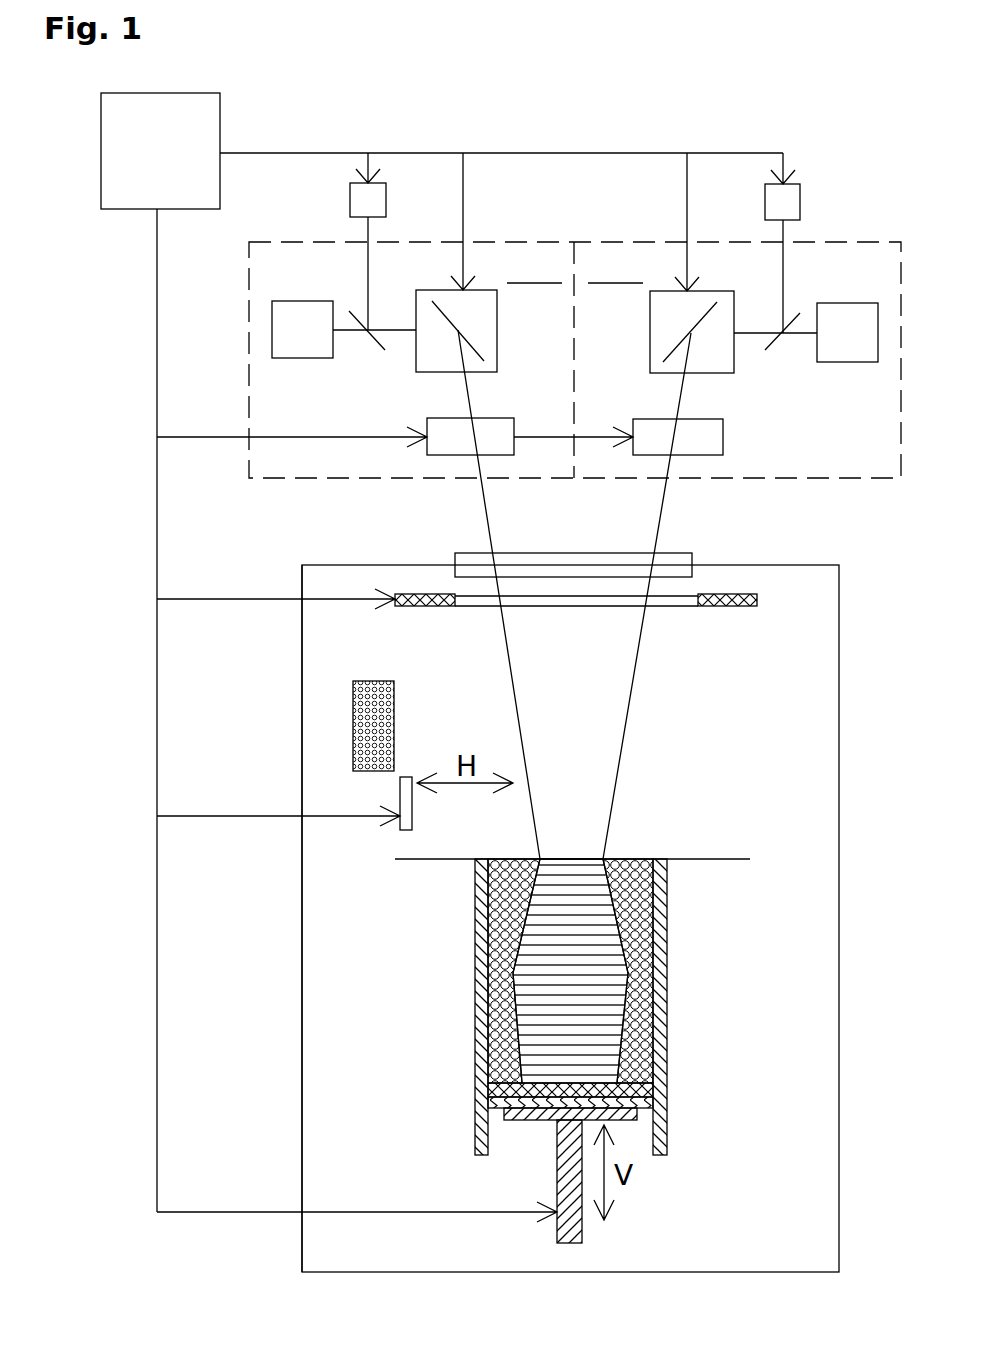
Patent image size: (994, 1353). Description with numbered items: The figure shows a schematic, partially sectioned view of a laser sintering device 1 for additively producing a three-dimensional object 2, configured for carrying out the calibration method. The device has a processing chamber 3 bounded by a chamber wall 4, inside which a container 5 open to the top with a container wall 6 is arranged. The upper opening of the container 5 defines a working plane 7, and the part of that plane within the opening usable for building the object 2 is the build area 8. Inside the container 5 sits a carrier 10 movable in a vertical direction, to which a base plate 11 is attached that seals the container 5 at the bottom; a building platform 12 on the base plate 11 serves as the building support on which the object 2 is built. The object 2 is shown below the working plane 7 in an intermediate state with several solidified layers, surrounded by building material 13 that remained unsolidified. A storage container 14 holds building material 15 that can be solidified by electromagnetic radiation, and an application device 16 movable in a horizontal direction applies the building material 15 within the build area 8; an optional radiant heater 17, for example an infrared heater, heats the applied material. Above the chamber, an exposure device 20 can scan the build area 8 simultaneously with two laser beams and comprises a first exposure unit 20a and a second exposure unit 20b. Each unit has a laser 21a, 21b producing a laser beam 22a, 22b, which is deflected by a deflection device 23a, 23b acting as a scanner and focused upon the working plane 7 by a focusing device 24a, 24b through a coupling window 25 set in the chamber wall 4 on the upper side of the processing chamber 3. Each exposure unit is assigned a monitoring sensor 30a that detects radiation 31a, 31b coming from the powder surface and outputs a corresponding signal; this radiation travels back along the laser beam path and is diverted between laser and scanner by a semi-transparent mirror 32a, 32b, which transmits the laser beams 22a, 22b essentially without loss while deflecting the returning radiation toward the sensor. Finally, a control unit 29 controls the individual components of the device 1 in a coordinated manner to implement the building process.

The laser sintering device 1 is at (855, 203).
The object 2 is at (590, 918).
The processing chamber 3 is at (791, 612).
The chamber wall 4 is at (302, 1060).
The container 5 is at (569, 1007).
The container wall 6 is at (662, 1008).
The working plane 7 is at (718, 859).
The build area 8 is at (622, 859).
The carrier 10 is at (546, 1112).
The base plate 11 is at (507, 1107).
The building platform 12 is at (488, 1090).
The building material 13 is at (507, 905).
The storage container 14 is at (372, 681).
The building material 15 is at (394, 727).
The application device 16 is at (397, 798).
The radiant heater 17 is at (425, 594).
The exposure device 20 is at (655, 230).
The first exposure unit 20a is at (534, 270).
The second exposure unit 20b is at (615, 270).
The laser 21a is at (300, 356).
The laser 21b is at (848, 356).
The laser beam 22a is at (337, 333).
The laser beam 22b is at (813, 338).
The deflection device 23a is at (455, 300).
The deflection device 23b is at (690, 302).
The focusing device 24a is at (481, 425).
The focusing device 24b is at (667, 425).
The coupling window 25 is at (667, 565).
The control unit 29 is at (160, 151).
The monitoring sensor 30a is at (352, 196).
The radiation 31a is at (371, 302).
The radiation 31b is at (780, 305).
The semi-transparent mirror 32a is at (364, 310).
The semi-transparent mirror 32b is at (793, 318).